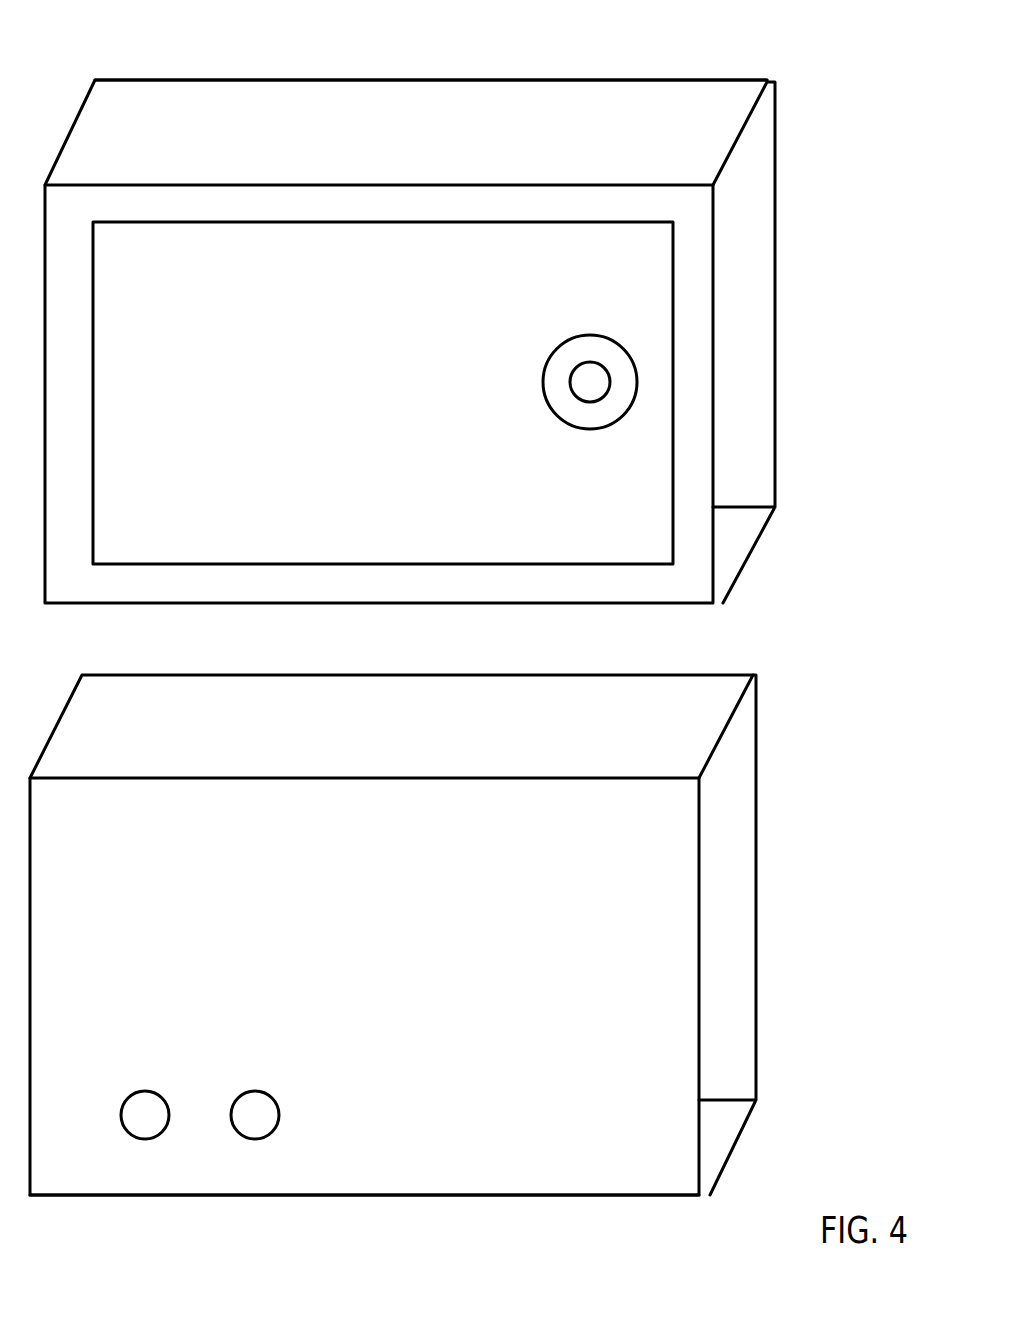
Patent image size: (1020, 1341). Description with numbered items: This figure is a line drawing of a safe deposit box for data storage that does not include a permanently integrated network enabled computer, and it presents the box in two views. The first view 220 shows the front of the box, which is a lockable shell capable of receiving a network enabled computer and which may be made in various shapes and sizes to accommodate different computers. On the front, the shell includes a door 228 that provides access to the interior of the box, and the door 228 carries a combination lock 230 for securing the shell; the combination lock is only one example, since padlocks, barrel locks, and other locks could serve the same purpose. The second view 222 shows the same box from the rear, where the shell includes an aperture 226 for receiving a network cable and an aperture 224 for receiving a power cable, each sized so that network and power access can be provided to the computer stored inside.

The first view 220 is at (452, 301).
The second view 222 is at (443, 966).
The aperture for receiving a power cable 224 is at (319, 1090).
The aperture for receiving a network cable 226 is at (207, 1090).
The door 228 is at (212, 314).
The combination lock 230 is at (543, 380).